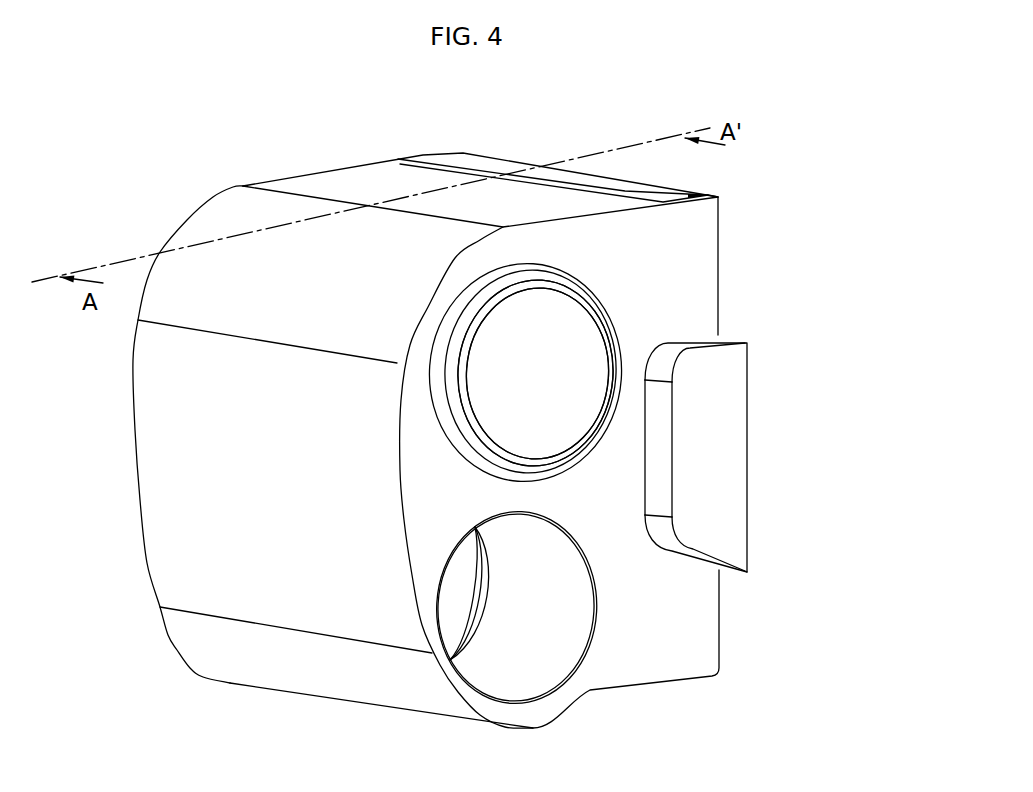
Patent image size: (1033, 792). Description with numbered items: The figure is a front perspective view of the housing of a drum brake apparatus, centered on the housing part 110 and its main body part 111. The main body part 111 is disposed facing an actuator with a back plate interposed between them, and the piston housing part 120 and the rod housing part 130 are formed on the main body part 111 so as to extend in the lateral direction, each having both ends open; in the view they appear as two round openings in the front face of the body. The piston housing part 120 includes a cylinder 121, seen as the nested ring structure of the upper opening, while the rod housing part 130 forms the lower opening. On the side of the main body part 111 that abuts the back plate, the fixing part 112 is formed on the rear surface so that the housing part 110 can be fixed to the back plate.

The housing part 110 is at (668, 182).
The main body part 111 is at (668, 182).
The fixing part 112 is at (731, 437).
The piston housing part 120 is at (560, 357).
The cylinder 121 is at (560, 357).
The rod housing part 130 is at (550, 603).